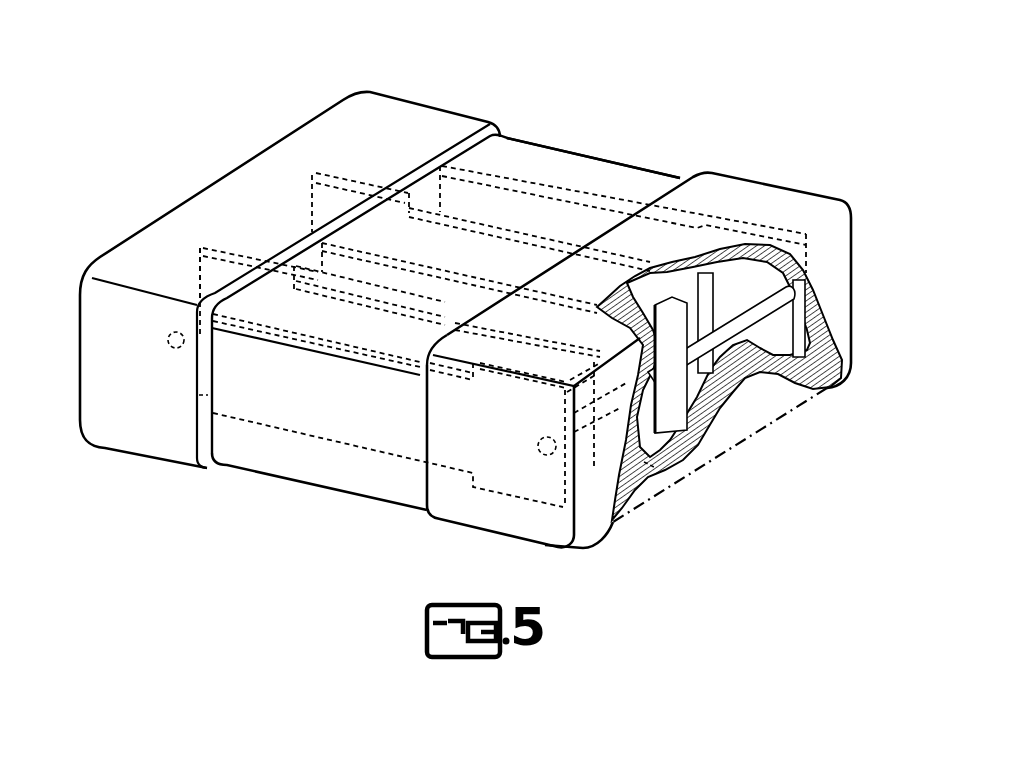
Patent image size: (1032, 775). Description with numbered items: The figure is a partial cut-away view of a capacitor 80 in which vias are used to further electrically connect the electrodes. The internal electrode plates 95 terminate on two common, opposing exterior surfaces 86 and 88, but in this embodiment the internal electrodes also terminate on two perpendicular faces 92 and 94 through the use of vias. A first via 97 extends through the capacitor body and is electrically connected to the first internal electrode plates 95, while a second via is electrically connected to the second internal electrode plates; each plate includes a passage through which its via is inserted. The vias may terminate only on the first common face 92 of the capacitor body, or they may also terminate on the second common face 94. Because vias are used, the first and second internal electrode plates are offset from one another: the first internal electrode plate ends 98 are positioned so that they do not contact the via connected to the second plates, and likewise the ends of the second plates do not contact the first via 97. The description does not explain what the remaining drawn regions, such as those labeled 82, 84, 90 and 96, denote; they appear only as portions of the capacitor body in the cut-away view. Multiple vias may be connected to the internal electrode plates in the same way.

The capacitor 80 is at (570, 80).
The first end section 82 is at (229, 207).
The second end section 84 is at (770, 200).
The first exterior surface 86 is at (277, 479).
The opposing exterior surface 88 is at (610, 178).
The side wall 90 is at (840, 340).
The first common face 92 is at (308, 462).
The second common face 94 is at (560, 141).
The first internal electrode plates 95 is at (524, 497).
The rear surface 96 is at (266, 140).
The first via 97 is at (778, 308).
The first internal electrode plate ends 98 is at (207, 396).